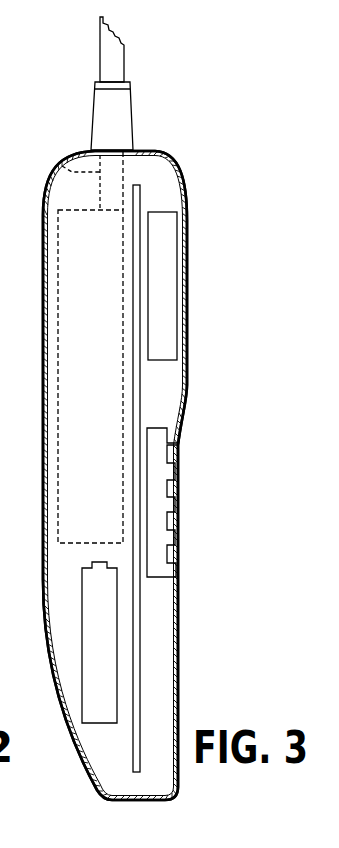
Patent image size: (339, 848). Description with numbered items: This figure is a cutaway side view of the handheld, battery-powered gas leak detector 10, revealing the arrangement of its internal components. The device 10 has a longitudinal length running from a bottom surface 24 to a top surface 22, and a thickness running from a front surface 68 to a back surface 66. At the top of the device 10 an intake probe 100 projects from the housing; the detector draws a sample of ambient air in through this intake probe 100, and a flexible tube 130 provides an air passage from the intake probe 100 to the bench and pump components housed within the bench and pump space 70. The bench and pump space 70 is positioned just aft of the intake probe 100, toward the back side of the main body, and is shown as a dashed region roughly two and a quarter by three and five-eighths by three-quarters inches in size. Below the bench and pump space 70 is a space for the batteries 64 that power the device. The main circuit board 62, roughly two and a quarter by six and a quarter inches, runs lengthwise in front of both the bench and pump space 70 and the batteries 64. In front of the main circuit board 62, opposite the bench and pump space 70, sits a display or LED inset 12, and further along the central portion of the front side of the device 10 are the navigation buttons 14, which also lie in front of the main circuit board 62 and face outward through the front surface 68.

The gas leak detector 10 is at (178, 641).
The display or LED inset 12 is at (177, 291).
The navigation buttons 14 is at (168, 519).
The top surface 22 is at (145, 149).
The bottom surface 24 is at (134, 801).
The main circuit board 62 is at (140, 392).
The batteries 64 is at (82, 707).
The back surface 66 is at (43, 440).
The front surface 68 is at (188, 362).
The bench and pump space 70 is at (58, 378).
The intake probe 100 is at (124, 60).
The flexible tube 130 is at (68, 160).